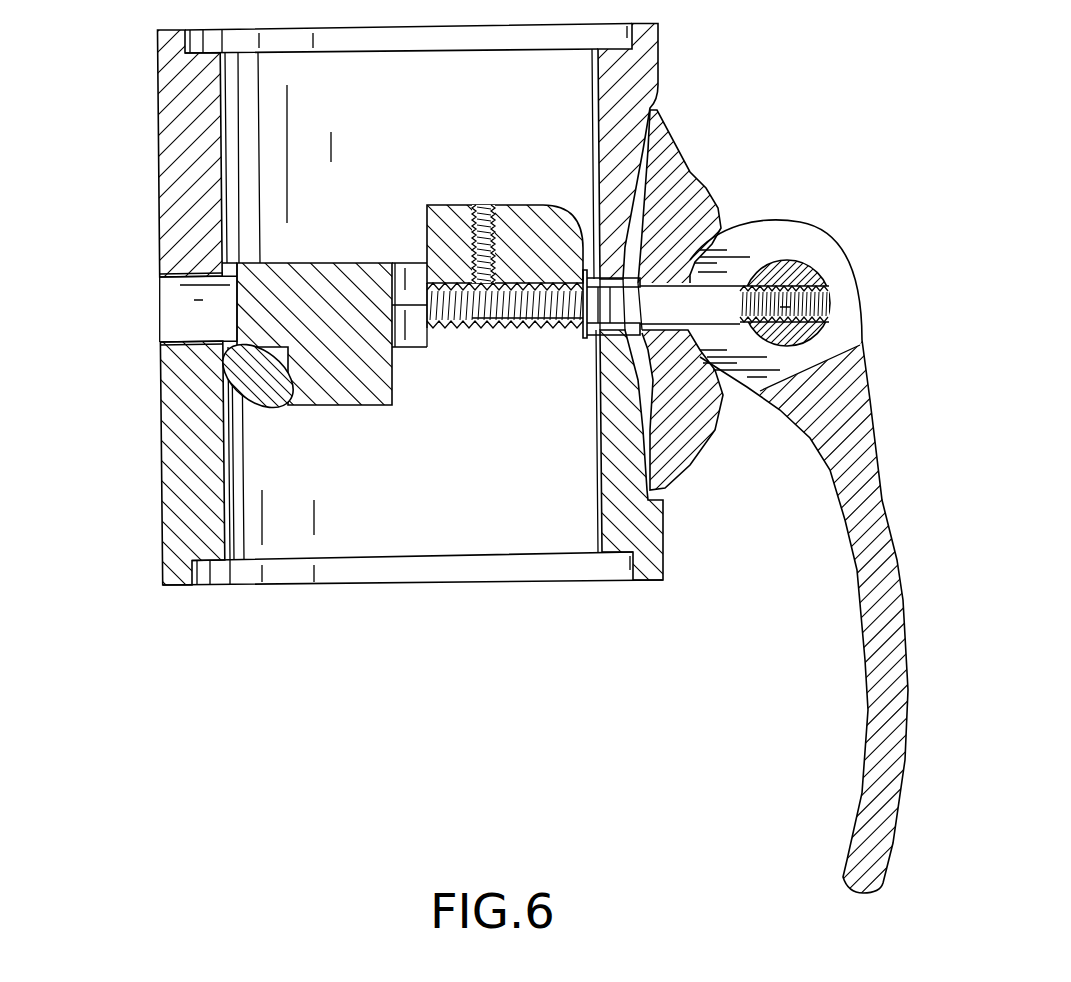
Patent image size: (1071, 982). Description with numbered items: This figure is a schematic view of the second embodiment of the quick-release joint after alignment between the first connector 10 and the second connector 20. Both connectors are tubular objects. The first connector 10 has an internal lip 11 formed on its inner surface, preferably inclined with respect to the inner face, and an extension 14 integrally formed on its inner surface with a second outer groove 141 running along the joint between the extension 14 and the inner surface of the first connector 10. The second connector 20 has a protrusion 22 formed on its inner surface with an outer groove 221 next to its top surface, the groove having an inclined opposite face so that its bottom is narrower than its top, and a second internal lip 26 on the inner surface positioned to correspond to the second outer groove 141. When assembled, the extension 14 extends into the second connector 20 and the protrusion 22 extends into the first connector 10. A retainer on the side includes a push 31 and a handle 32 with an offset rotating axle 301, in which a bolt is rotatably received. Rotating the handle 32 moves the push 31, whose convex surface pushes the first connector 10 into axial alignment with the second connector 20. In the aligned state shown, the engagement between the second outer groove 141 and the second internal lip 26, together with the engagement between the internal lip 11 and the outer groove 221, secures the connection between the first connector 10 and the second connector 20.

The first connector 10 is at (182, 90).
The second connector 20 is at (177, 473).
The second internal lip 26 is at (226, 347).
The extension 14 is at (368, 390).
The second outer groove 141 is at (288, 376).
The protrusion 22 is at (457, 207).
The outer groove 221 is at (593, 243).
The internal lip 11 is at (593, 243).
The push 31 is at (690, 182).
The handle 32 is at (773, 228).
The offset rotating axle 301 is at (847, 342).